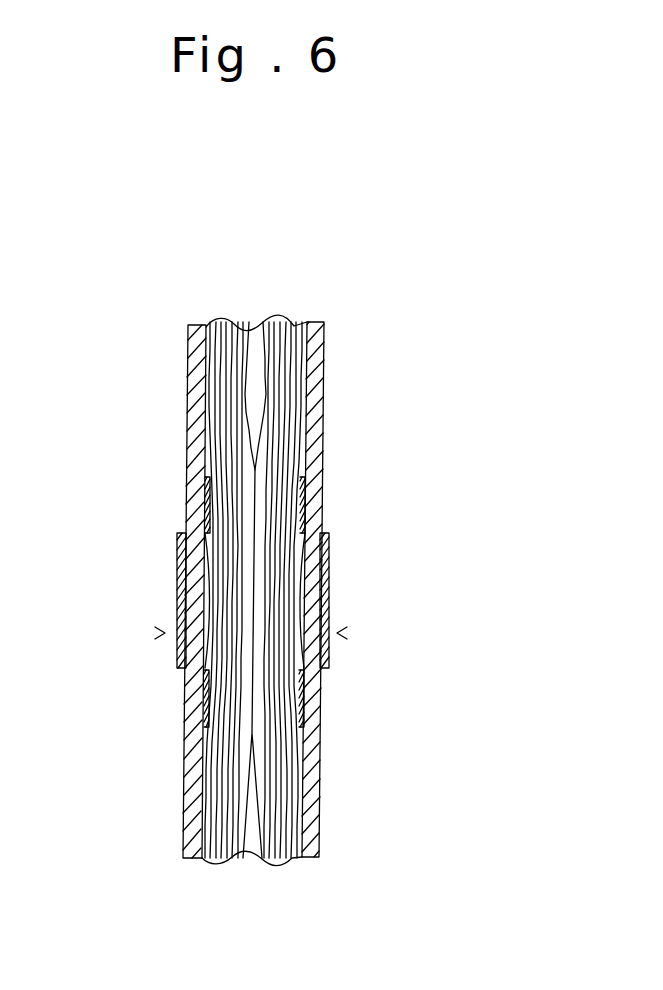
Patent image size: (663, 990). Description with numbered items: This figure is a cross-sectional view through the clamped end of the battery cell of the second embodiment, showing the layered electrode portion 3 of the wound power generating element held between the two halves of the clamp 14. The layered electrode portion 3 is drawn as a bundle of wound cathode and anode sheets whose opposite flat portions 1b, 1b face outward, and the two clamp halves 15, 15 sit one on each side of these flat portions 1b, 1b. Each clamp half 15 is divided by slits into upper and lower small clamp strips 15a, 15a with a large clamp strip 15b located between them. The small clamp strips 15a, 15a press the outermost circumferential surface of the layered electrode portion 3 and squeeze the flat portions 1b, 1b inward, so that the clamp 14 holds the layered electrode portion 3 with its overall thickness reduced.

The layered electrode portion 3 is at (235, 352).
The flat portion 1b is at (190, 372).
The clamp 14 is at (165, 633).
The clamp half 15 is at (177, 570).
The small clamp strip 15a is at (205, 510).
The large clamp strip 15b is at (177, 598).